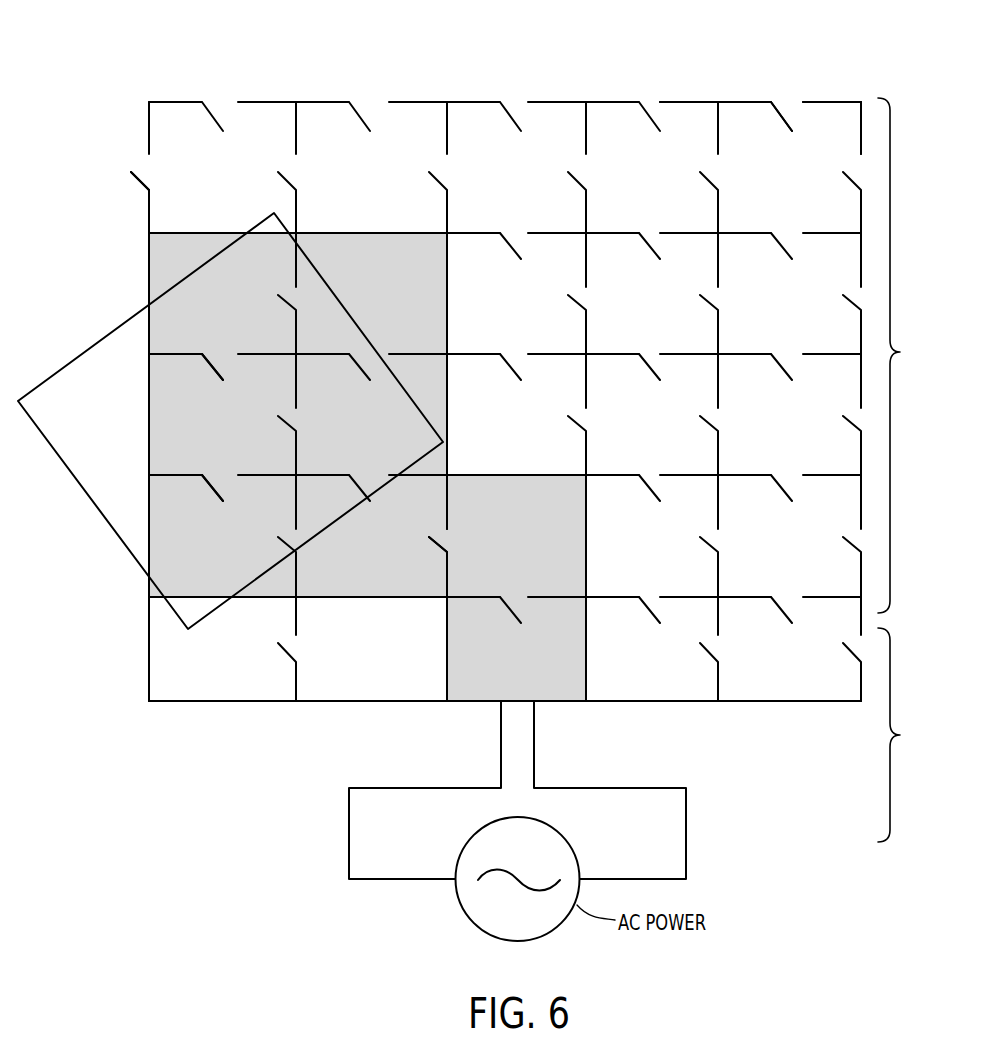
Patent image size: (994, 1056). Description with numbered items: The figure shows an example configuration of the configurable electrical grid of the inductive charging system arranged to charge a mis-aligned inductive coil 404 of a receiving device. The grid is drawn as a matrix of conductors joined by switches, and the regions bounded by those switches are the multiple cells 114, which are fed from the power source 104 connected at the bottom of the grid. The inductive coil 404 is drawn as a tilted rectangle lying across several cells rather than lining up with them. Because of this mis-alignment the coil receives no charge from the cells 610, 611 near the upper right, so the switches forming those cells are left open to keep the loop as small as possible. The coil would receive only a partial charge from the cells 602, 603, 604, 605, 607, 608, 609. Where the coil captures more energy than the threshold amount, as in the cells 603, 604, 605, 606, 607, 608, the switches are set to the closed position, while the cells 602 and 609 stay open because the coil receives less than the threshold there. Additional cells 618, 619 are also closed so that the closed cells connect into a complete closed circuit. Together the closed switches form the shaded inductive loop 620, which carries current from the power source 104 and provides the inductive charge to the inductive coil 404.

The power source 104 is at (908, 735).
The multiple cells 114 is at (908, 355).
The inductive coil 404 is at (115, 327).
The cell 602 is at (158, 213).
The cell 603 is at (438, 293).
The cell 604 is at (158, 253).
The cell 605 is at (438, 380).
The cell 606 is at (158, 422).
The cell 607 is at (438, 500).
The cell 608 is at (158, 497).
The cell 609 is at (224, 685).
The cell 610 is at (832, 120).
The cell 611 is at (685, 120).
The additional cell 618 is at (570, 537).
The additional cell 619 is at (570, 634).
The inductive loop 620 is at (557, 690).